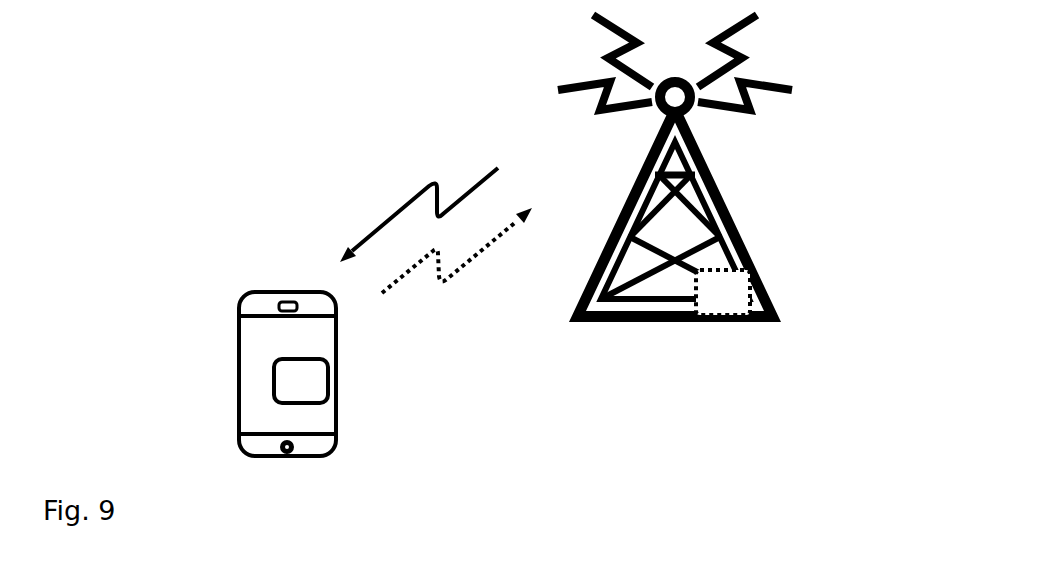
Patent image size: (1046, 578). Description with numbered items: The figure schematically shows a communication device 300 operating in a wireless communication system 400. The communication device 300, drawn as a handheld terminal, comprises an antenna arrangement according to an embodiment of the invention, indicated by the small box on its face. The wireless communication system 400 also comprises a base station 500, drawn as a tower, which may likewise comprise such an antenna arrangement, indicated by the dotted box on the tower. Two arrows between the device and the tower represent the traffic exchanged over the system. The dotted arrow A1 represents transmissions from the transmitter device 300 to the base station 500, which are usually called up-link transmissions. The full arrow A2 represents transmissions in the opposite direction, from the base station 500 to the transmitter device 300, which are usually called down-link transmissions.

The communication device 300 is at (240, 404).
The wireless communication system 400 is at (276, 131).
The base station 500 is at (753, 271).
The dotted arrow A1 is at (447, 286).
The full arrow A2 is at (423, 187).